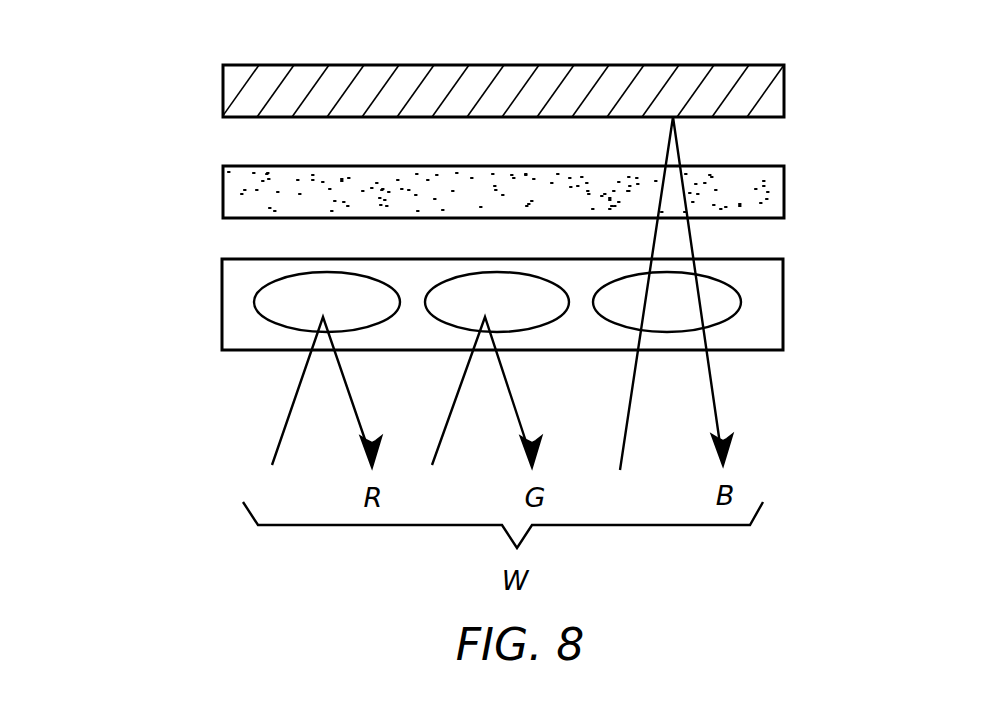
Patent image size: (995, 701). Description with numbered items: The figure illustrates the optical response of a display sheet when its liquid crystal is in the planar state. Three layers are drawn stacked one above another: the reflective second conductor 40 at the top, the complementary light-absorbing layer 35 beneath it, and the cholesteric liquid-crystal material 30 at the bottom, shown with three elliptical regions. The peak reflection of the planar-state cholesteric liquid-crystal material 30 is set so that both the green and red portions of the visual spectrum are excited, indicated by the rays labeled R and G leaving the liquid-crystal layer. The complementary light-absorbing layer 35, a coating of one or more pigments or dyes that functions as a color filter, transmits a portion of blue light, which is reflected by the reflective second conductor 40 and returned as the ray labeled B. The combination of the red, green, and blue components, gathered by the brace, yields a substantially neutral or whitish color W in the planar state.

The reflective second conductor 40 is at (223, 100).
The complementary light-absorbing layer 35 is at (222, 200).
The cholesteric liquid-crystal material 30 is at (221, 302).